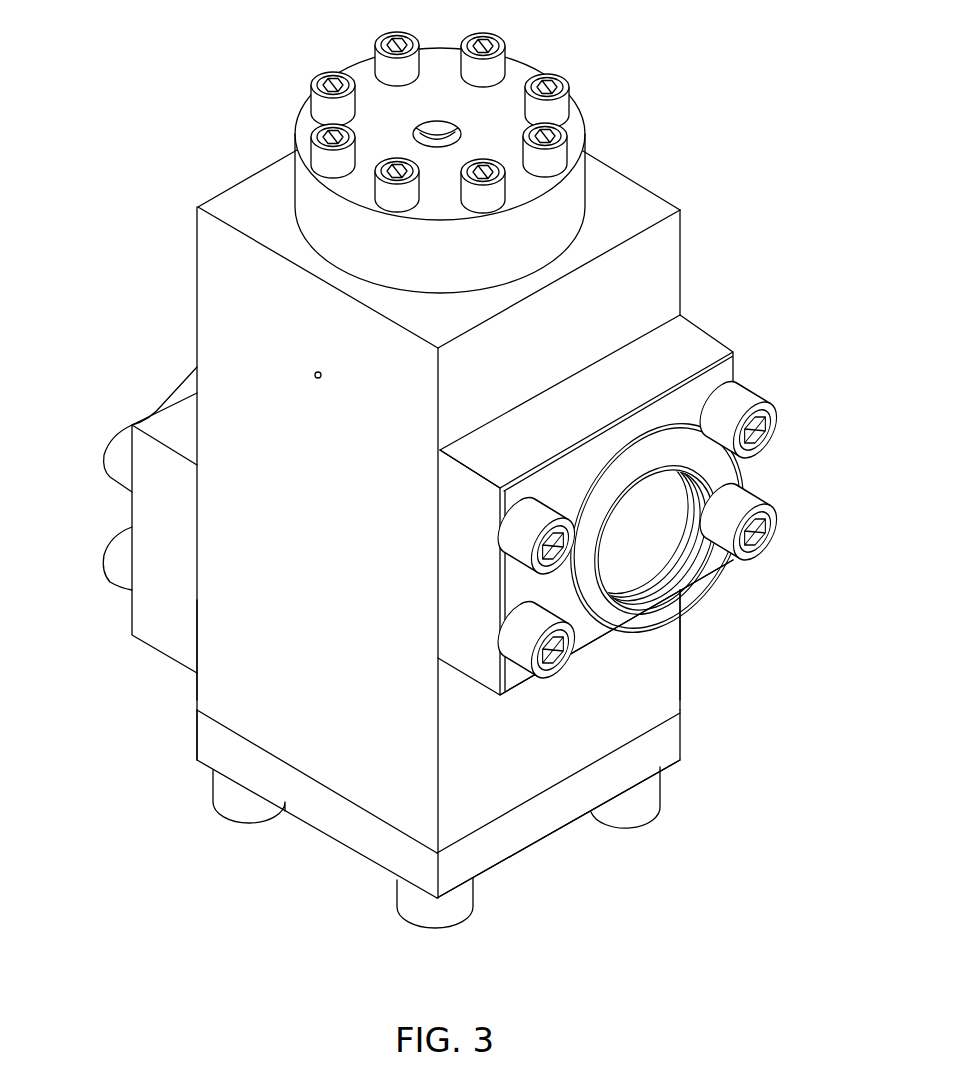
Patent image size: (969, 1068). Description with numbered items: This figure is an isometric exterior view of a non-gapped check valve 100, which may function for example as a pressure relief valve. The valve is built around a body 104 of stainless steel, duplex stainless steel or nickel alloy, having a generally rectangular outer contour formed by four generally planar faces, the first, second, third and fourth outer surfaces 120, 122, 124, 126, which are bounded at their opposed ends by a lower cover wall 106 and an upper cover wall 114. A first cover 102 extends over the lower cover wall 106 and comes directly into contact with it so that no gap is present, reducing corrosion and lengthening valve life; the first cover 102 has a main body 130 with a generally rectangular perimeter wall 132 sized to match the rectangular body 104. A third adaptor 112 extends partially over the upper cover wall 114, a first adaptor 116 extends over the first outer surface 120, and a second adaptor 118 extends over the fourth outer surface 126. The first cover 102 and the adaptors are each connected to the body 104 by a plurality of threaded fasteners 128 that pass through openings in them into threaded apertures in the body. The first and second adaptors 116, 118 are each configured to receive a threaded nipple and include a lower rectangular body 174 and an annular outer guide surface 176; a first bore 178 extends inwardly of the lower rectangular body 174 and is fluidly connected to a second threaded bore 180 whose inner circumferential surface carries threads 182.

The non-gapped check valve 100 is at (708, 226).
The first cover 102 is at (655, 752).
The body 104 is at (642, 684).
The lower cover wall 106 is at (220, 728).
The third adaptor 112 is at (576, 95).
The upper cover wall 114 is at (248, 207).
The first adaptor 116 is at (735, 358).
The second adaptor 118 is at (172, 636).
The first outer surface 120 is at (585, 341).
The second outer surface 122 is at (671, 176).
The third outer surface 124 is at (331, 504).
The fourth outer surface 126 is at (183, 320).
The threaded fasteners 128 is at (580, 93).
The main body 130 is at (607, 898).
The perimeter wall 132 is at (789, 790).
The lower rectangular body 174 is at (700, 338).
The annular outer guide surface 176 is at (706, 592).
The first bore 178 is at (690, 622).
The second threaded bore 180 is at (745, 560).
The threads 182 is at (560, 577).